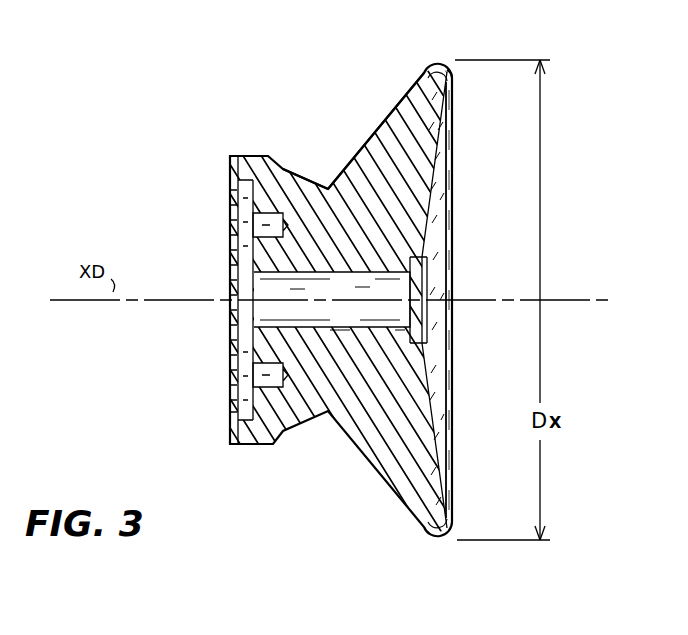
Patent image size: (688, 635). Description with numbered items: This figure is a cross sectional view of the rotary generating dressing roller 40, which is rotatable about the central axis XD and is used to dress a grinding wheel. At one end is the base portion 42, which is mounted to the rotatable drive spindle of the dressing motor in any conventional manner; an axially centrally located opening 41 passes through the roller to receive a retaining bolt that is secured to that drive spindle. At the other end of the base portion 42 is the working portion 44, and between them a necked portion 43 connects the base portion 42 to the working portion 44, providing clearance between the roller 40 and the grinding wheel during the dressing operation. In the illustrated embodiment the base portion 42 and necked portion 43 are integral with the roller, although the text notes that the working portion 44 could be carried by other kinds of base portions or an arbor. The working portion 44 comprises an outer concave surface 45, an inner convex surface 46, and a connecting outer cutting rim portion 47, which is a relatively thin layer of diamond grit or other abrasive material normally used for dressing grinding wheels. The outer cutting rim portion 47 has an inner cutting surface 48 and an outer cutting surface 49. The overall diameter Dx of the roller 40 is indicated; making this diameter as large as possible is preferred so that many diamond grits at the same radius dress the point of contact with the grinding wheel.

The rotary dressing roller 40 is at (348, 70).
The axially centrally located opening 41 is at (268, 322).
The base portion 42 is at (243, 155).
The necked portion 43 is at (307, 178).
The working portion 44 is at (372, 143).
The outer concave surface 45 is at (438, 327).
The inner convex surface 46 is at (397, 104).
The outer cutting rim portion 47 is at (442, 60).
The inner cutting surface 48 is at (434, 62).
The outer cutting surface 49 is at (450, 79).